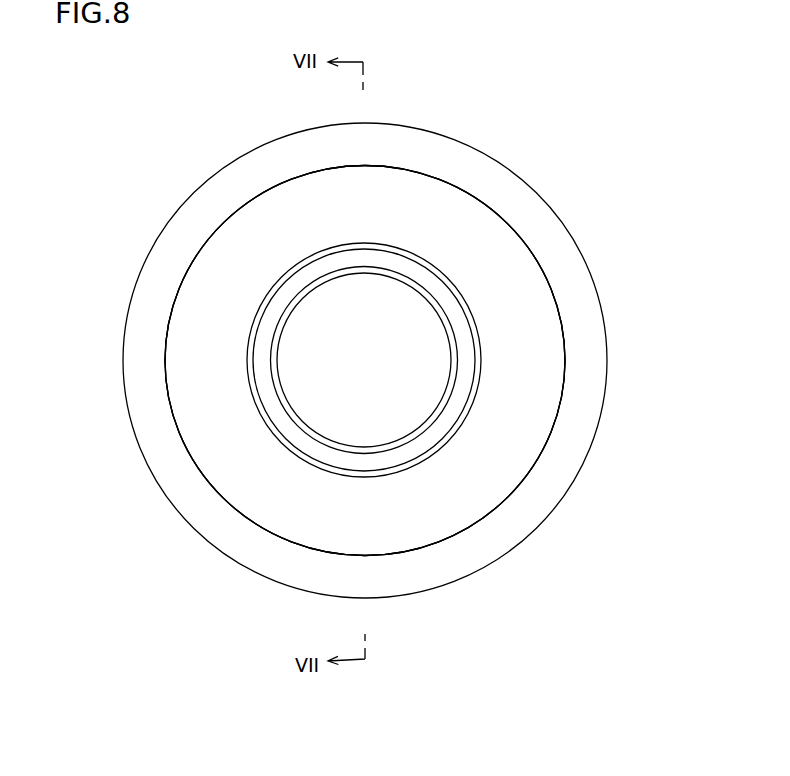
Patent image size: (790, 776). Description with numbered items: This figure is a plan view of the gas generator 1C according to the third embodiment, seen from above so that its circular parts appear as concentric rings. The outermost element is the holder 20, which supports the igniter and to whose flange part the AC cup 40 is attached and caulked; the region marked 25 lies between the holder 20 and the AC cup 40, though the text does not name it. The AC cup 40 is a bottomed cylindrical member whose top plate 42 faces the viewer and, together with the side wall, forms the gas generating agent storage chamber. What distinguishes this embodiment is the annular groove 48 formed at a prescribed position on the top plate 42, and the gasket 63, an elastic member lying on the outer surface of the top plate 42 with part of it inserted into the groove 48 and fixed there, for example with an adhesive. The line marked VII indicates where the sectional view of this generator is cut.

The gas generator 1C is at (576, 159).
The holder 20 is at (239, 576).
The annular portion 25 is at (310, 573).
The AC cup 40 is at (212, 220).
The top plate 42 is at (192, 361).
The groove part 48 is at (398, 250).
The gasket 63 is at (468, 362).